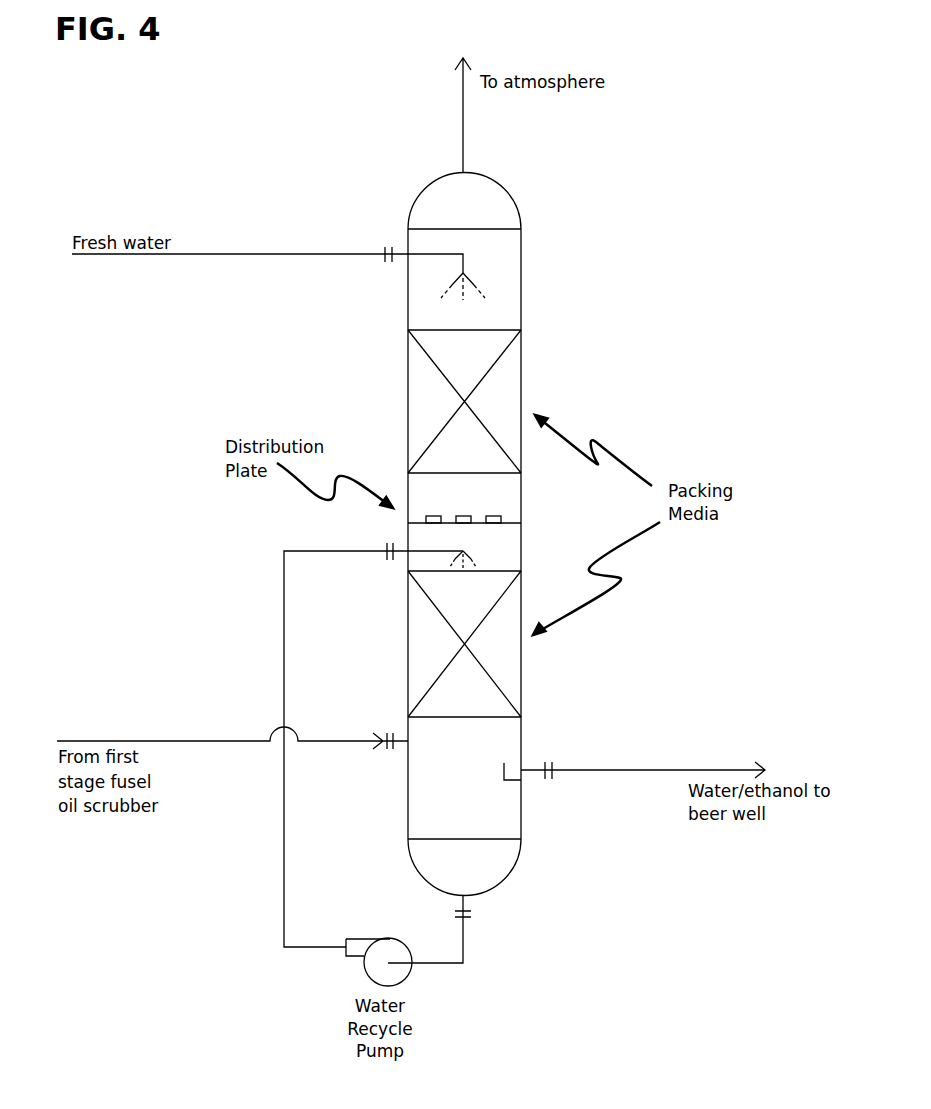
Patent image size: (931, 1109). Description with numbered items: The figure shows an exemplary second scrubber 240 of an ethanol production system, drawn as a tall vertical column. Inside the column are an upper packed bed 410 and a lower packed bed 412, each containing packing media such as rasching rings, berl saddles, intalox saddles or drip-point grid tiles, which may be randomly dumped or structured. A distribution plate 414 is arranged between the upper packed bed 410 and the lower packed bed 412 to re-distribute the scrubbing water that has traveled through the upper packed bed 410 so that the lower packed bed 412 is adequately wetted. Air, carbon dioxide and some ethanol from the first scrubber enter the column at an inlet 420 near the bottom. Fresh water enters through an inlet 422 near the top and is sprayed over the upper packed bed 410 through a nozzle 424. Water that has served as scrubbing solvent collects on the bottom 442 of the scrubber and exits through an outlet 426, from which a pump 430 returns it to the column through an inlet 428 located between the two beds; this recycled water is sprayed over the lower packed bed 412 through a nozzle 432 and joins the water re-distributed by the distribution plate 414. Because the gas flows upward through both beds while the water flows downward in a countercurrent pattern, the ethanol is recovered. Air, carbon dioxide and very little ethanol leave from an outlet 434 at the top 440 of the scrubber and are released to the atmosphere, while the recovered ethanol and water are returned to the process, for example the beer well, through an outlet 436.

The second scrubber 240 is at (521, 316).
The upper packed bed 410 is at (521, 381).
The lower packed bed 412 is at (521, 677).
The distribution plate 414 is at (407, 523).
The inlet 420 is at (407, 740).
The inlet 422 is at (407, 257).
The nozzle 424 is at (463, 267).
The outlet 426 is at (463, 897).
The inlet 428 is at (407, 553).
The pump 430 is at (365, 946).
The nozzle 432 is at (463, 551).
The outlet 434 is at (463, 172).
The outlet 436 is at (521, 768).
The top 440 is at (495, 178).
The bottom 442 is at (517, 862).